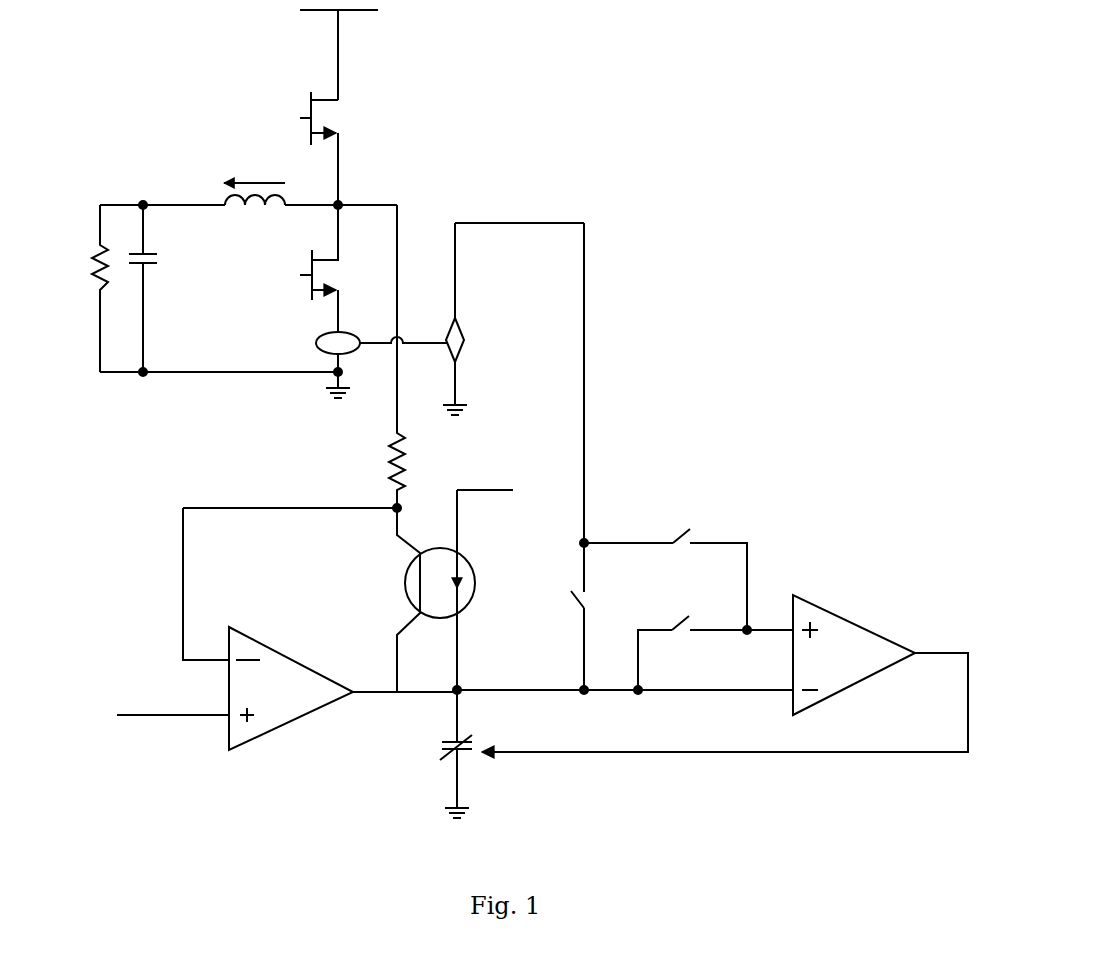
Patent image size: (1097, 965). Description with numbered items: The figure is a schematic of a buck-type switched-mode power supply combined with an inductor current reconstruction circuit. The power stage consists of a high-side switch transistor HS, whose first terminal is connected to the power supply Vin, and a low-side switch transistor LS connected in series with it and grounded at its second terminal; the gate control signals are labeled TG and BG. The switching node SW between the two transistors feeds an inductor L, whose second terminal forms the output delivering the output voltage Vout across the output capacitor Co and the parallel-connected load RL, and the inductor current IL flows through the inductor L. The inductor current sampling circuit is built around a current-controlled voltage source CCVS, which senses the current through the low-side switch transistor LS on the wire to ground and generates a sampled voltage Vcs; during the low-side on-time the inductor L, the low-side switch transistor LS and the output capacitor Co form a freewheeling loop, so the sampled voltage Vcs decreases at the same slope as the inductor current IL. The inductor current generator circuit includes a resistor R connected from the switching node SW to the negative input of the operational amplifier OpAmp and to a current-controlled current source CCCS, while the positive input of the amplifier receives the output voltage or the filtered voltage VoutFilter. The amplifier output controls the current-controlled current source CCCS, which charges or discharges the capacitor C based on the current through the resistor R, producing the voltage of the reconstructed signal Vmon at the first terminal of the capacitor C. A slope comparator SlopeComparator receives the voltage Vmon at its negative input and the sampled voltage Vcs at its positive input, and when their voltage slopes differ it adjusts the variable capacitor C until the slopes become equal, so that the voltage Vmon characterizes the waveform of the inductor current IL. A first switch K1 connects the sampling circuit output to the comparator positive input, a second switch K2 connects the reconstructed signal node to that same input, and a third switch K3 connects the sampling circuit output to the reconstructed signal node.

The power supply Vin is at (339, 55).
The high-side switch transistor HS is at (338, 148).
The top gate signal TG is at (295, 132).
The switching node SW is at (341, 197).
The inductor L is at (255, 214).
The inductor current IL is at (254, 174).
The output voltage Vout is at (162, 196).
The load RL is at (89, 288).
The output capacitor Co is at (152, 290).
The low-side switch transistor LS is at (338, 268).
The bottom gate signal BG is at (296, 290).
The sampled voltage Vcs is at (519, 372).
The current-controlled voltage source CCVS is at (470, 361).
The resistor R is at (408, 356).
The current-controlled current source CCCS is at (348, 590).
The operational amplifier OpAmp is at (287, 629).
The filtered voltage VoutFilter is at (143, 701).
The voltage of the reconstructed signal Vmon is at (623, 683).
The first switch K1 is at (663, 571).
The second switch K2 is at (715, 643).
The third switch K3 is at (569, 616).
The slope comparator SlopeComparator is at (725, 673).
The capacitor C is at (436, 754).